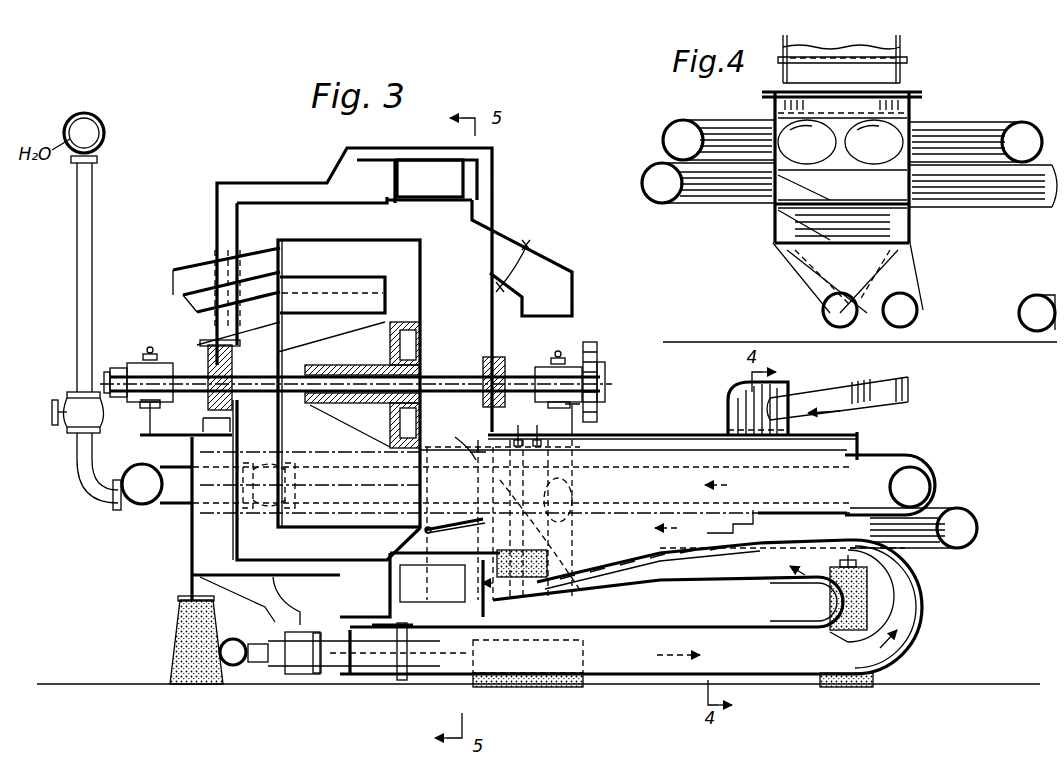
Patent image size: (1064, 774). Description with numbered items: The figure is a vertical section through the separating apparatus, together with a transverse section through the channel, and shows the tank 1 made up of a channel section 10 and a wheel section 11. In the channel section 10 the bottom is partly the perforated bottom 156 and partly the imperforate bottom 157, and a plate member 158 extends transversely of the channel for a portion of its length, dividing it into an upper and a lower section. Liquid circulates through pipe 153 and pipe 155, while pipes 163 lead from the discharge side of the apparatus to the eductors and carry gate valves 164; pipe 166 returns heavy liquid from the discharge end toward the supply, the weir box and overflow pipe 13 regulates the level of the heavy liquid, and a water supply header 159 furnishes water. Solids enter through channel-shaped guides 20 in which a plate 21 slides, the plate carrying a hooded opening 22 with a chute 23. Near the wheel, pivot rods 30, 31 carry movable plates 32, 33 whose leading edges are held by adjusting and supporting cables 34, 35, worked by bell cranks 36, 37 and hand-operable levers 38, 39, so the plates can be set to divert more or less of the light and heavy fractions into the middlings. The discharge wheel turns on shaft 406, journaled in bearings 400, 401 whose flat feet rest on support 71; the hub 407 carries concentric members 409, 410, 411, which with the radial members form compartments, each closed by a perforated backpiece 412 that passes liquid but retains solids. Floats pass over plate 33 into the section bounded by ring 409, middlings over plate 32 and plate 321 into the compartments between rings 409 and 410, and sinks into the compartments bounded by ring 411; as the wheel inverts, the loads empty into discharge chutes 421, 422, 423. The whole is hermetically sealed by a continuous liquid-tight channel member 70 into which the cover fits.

In FIG. 3, the tank 1 is at (496, 161).
In FIG. 3, the channel section of the tank 10 is at (672, 583).
In FIG. 4, the channel section of the tank 10 is at (910, 108).
In FIG. 3, the wheel section of the tank 11 is at (262, 181).
In FIG. 3, the weir box and overflow pipe 13 is at (978, 529).
In FIG. 4, the weir box and overflow pipe 13 is at (1020, 184).
In FIG. 3, the channel-shaped guides 20 is at (601, 434).
In FIG. 3, the plate 21 is at (661, 433).
In FIG. 3, the hooded opening 22 is at (728, 410).
In FIG. 3, the chute 23 is at (915, 391).
In FIG. 3, the pivot rod 30 is at (456, 556).
In FIG. 3, the pivot rod 31 is at (430, 525).
In FIG. 3, the movable plate 32 is at (490, 558).
In FIG. 3, the movable plate 33 is at (436, 528).
In FIG. 3, the adjusting and supporting cable 34 is at (515, 521).
In FIG. 3, the adjusting and supporting cable 35 is at (470, 466).
In FIG. 3, the bell crank 36 is at (521, 461).
In FIG. 3, the bell crank 37 is at (478, 446).
In FIG. 3, the hand-operable lever 38 is at (537, 440).
In FIG. 3, the hand-operable lever 39 is at (519, 424).
In FIG. 3, the channel member 70 is at (203, 431).
In FIG. 3, the support 71 is at (149, 417).
In FIG. 3, the pipe 153 is at (805, 598).
In FIG. 4, the pipe 153 is at (822, 320).
In FIG. 3, the pipe 155 is at (922, 607).
In FIG. 4, the pipe 155 is at (922, 311).
In FIG. 3, the perforated bottom of the channel 156 is at (622, 569).
In FIG. 3, the imperforate bottom of the channel 157 is at (803, 545).
In FIG. 3, the plate member 158 is at (815, 512).
In FIG. 4, the plate member 158 is at (907, 177).
In FIG. 3, the water supply header 159 is at (75, 119).
In FIG. 4, the pipes 163 is at (739, 126).
In FIG. 4, the gate valves 164 is at (873, 127).
In FIG. 3, the pipe 166 is at (262, 607).
In FIG. 3, the plate 321 is at (415, 566).
In FIG. 3, the bearing 400 is at (136, 362).
In FIG. 3, the bearing 401 is at (566, 365).
In FIG. 3, the shaft 406 is at (183, 376).
In FIG. 3, the hub 407 is at (311, 403).
In FIG. 3, the concentric member 409 is at (358, 240).
In FIG. 3, the concentric member 410 is at (346, 203).
In FIG. 3, the concentric member 411 is at (426, 160).
In FIG. 3, the perforated backpiece 412 is at (404, 185).
In FIG. 3, the discharge chute 421 is at (500, 239).
In FIG. 3, the discharge chute 422 is at (270, 341).
In FIG. 3, the discharge chute 423 is at (195, 261).